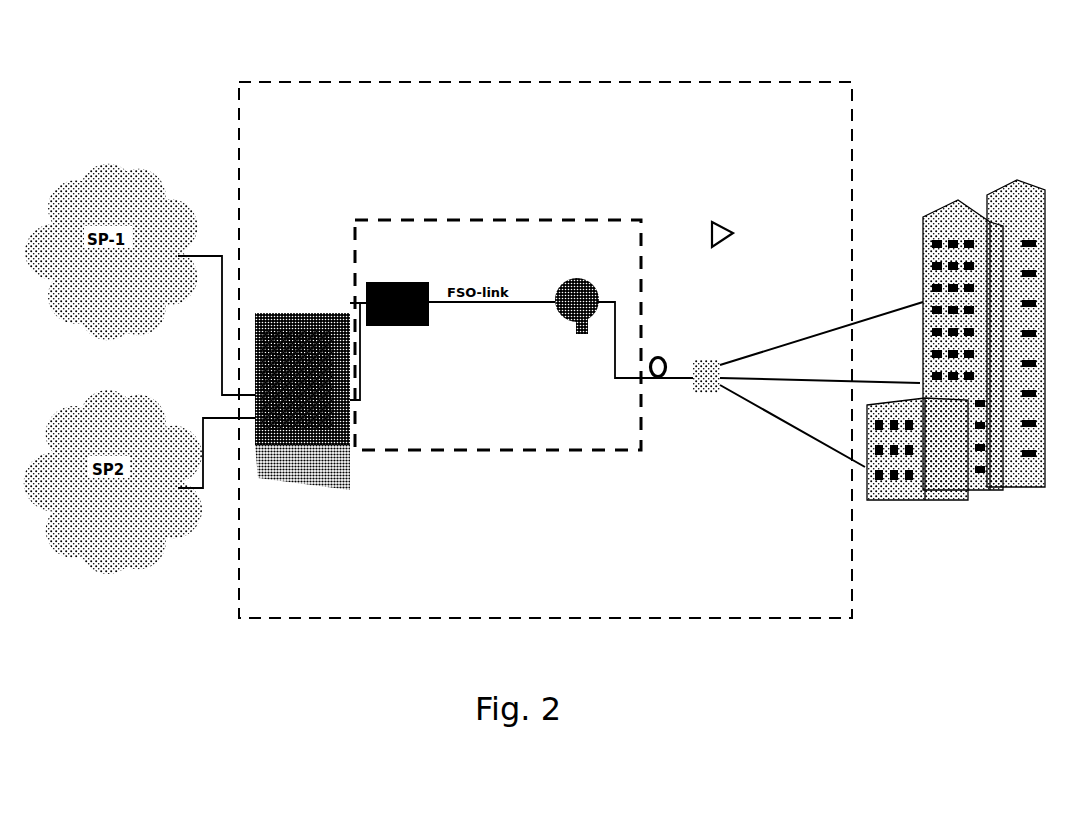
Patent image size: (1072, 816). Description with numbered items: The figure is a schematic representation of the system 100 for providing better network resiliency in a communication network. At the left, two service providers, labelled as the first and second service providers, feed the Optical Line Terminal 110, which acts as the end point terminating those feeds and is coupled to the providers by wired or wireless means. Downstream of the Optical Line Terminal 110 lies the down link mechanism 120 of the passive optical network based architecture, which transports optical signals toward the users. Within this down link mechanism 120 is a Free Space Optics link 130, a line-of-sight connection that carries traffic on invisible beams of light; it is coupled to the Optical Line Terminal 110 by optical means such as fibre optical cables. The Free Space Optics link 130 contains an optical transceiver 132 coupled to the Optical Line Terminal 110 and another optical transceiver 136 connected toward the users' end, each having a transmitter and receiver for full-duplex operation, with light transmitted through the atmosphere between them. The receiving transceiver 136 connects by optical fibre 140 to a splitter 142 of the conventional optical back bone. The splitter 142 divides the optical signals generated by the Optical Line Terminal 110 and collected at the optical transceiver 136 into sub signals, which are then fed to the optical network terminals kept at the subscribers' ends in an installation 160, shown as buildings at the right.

The system 100 is at (528, 122).
The Optical Line Terminal 110 is at (285, 313).
The down link mechanism 120 is at (724, 222).
The Free Space Optics link 130 is at (480, 262).
The optical transceiver 132 is at (399, 326).
The optical transceiver 136 is at (568, 326).
The optical fibre 140 is at (641, 383).
The splitter 142 is at (706, 393).
The installation 160 is at (947, 205).